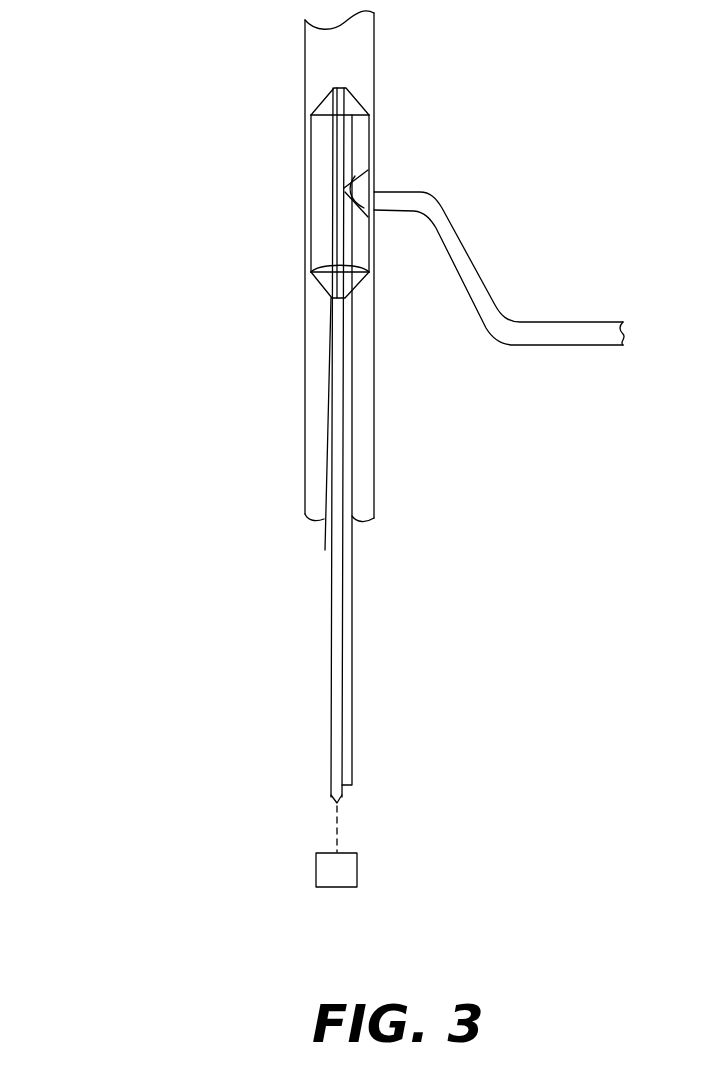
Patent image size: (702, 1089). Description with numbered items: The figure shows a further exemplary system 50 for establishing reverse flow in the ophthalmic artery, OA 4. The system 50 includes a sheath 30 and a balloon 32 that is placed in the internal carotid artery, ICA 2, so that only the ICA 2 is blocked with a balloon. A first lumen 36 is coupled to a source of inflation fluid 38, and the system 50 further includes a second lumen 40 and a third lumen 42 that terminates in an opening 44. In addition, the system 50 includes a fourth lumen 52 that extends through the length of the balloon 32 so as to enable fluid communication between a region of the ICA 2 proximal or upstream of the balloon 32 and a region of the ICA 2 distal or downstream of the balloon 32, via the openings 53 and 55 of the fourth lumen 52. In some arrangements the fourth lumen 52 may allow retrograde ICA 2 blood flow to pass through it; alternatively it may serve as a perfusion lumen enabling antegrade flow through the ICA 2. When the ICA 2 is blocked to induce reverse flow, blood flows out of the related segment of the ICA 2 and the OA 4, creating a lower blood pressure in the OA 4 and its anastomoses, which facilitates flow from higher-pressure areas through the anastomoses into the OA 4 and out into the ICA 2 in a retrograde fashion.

The system 50 is at (128, 269).
The ICA 2 is at (297, 484).
The balloon 32 is at (276, 182).
The opening 53 is at (305, 97).
The fourth lumen 52 is at (320, 243).
The opening 55 is at (322, 288).
The opening 44 is at (372, 186).
The OA 4 is at (481, 268).
The sheath 30 is at (363, 606).
The second lumen 40 is at (316, 553).
The third lumen 42 is at (371, 741).
The first lumen 36 is at (313, 778).
The source of inflation fluid 38 is at (336, 846).